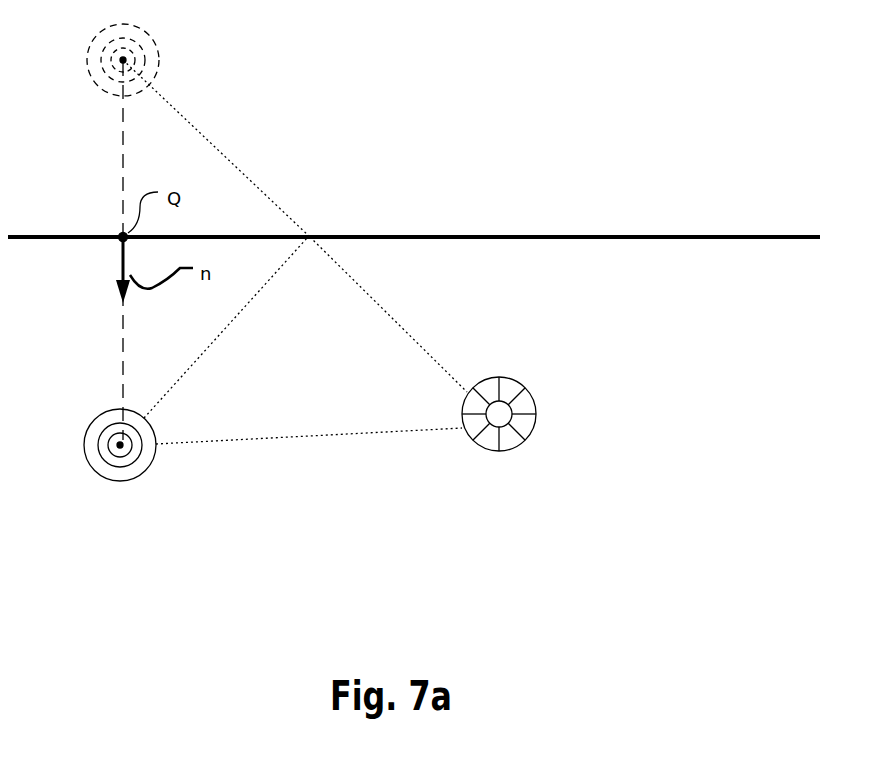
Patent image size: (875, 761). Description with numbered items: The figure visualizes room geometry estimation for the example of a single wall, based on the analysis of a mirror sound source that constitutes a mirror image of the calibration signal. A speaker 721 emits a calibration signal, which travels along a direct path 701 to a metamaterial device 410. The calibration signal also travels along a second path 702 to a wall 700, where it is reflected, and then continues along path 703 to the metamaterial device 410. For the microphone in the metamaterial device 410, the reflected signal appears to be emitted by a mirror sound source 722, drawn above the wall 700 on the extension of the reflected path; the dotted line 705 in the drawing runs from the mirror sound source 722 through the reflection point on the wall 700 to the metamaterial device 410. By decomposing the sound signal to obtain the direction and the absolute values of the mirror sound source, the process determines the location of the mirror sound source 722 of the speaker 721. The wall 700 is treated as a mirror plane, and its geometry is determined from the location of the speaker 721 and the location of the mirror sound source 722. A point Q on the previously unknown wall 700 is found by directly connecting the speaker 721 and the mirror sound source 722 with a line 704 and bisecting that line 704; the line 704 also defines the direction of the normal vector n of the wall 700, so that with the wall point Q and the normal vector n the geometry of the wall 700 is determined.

The mirror sound source 722 is at (123, 60).
The line from light source to lamp through plane 705 is at (244, 170).
The path 703 is at (365, 292).
The wall 700 is at (620, 237).
The line 704 is at (117, 342).
The second path 702 is at (207, 345).
The direct path 701 is at (265, 438).
The speaker 721 is at (120, 445).
The metamaterial device 410 is at (493, 450).